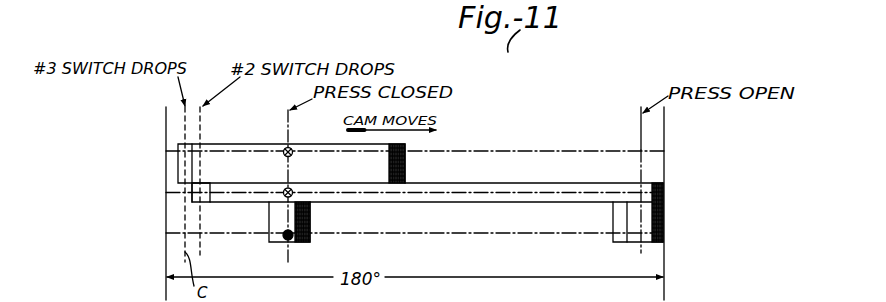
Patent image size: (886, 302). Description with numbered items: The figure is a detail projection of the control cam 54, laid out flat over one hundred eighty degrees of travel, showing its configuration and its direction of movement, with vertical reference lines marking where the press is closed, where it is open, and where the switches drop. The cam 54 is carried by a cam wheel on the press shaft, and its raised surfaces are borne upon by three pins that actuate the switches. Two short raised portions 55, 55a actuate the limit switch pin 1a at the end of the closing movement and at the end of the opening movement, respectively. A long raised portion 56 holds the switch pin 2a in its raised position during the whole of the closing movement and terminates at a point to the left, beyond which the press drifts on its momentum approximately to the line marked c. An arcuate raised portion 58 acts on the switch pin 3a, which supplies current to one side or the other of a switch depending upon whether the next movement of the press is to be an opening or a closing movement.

The cam 54 is at (541, 181).
The long raised portion 56 is at (467, 193).
The arcuate raised portion 58 is at (237, 152).
The short raised portion 55 is at (299, 243).
The short raised portion 55a is at (632, 242).
The switch pin 1a is at (294, 233).
The switch pin 2a is at (291, 190).
The switch pin 3a is at (291, 149).